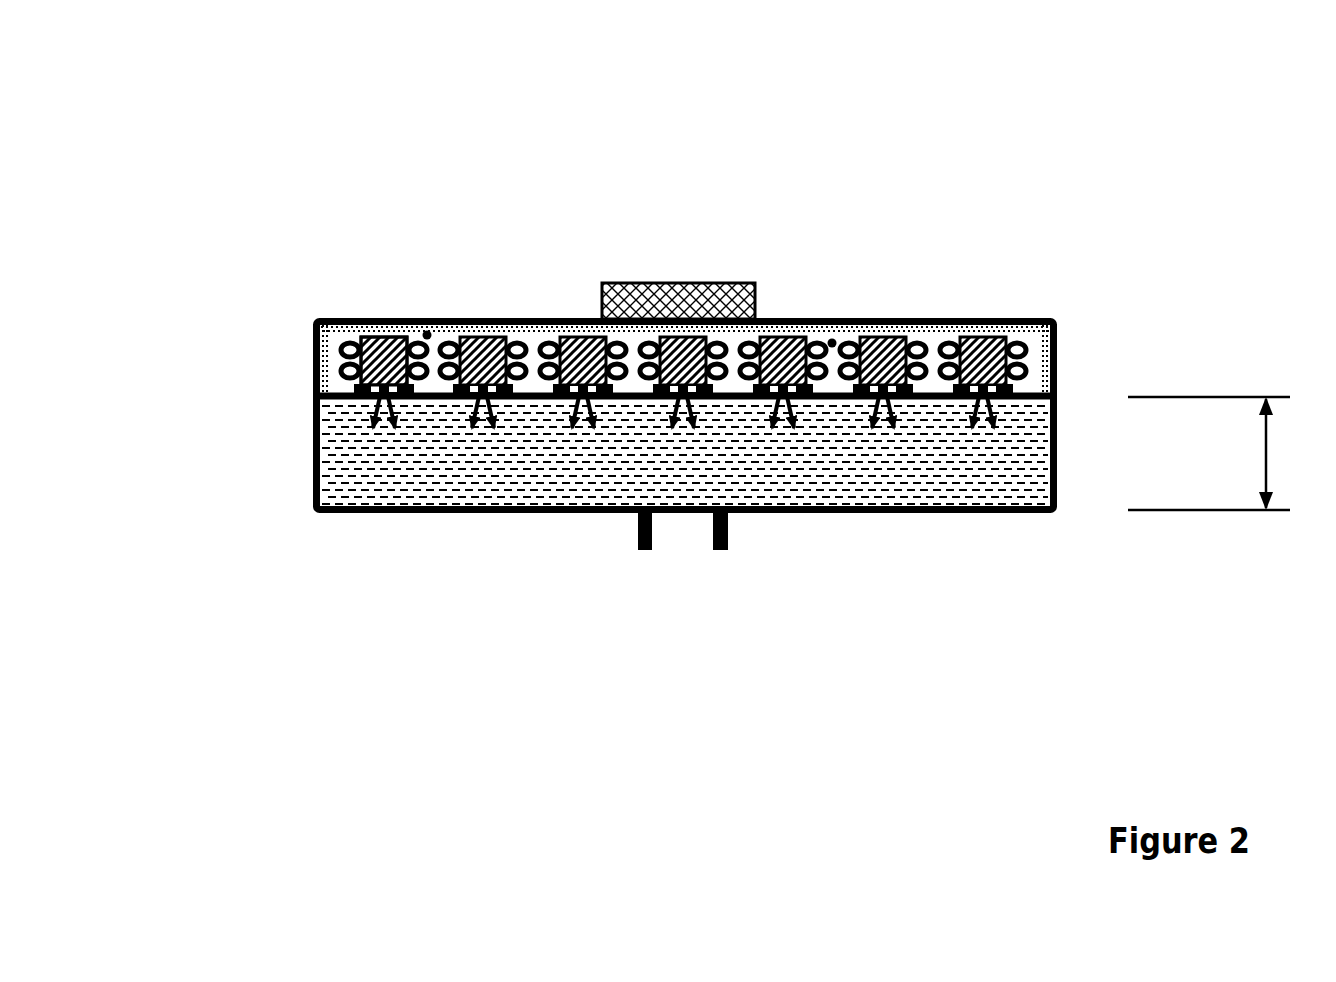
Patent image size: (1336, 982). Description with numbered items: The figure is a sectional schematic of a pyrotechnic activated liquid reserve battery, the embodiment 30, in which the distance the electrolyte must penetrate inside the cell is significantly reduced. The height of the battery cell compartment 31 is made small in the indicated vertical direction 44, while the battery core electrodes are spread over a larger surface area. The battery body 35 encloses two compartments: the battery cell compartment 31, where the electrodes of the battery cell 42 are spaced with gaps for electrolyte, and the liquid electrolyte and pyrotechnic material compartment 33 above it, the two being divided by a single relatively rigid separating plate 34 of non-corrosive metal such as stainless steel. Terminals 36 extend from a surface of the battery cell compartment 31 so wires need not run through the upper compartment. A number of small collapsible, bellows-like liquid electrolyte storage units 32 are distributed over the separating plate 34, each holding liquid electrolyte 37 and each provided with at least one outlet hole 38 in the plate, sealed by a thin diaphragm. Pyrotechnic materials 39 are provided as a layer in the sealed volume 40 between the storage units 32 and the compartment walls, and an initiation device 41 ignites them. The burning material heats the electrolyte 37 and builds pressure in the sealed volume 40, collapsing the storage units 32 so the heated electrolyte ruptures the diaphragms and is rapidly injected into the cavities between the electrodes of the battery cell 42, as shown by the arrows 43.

The liquid reserve battery embodiment 30 is at (1120, 145).
The battery cell compartment 31 is at (1078, 397).
The collapsible liquid electrolyte storage unit 32 is at (338, 357).
The liquid electrolyte and pyrotechnic material compartment 33 is at (1078, 322).
The separating plate 34 is at (355, 404).
The liquid reserve battery body 35 is at (302, 497).
The terminals 36 is at (657, 562).
The liquid electrolyte 37 is at (372, 318).
The outlet hole 38 is at (385, 406).
The pyrotechnic materials 39 is at (428, 332).
The sealed volume 40 is at (834, 340).
The initiation device 41 is at (665, 268).
The battery cell 42 is at (447, 458).
The arrows 43 is at (578, 435).
The vertical direction 44 is at (1230, 453).